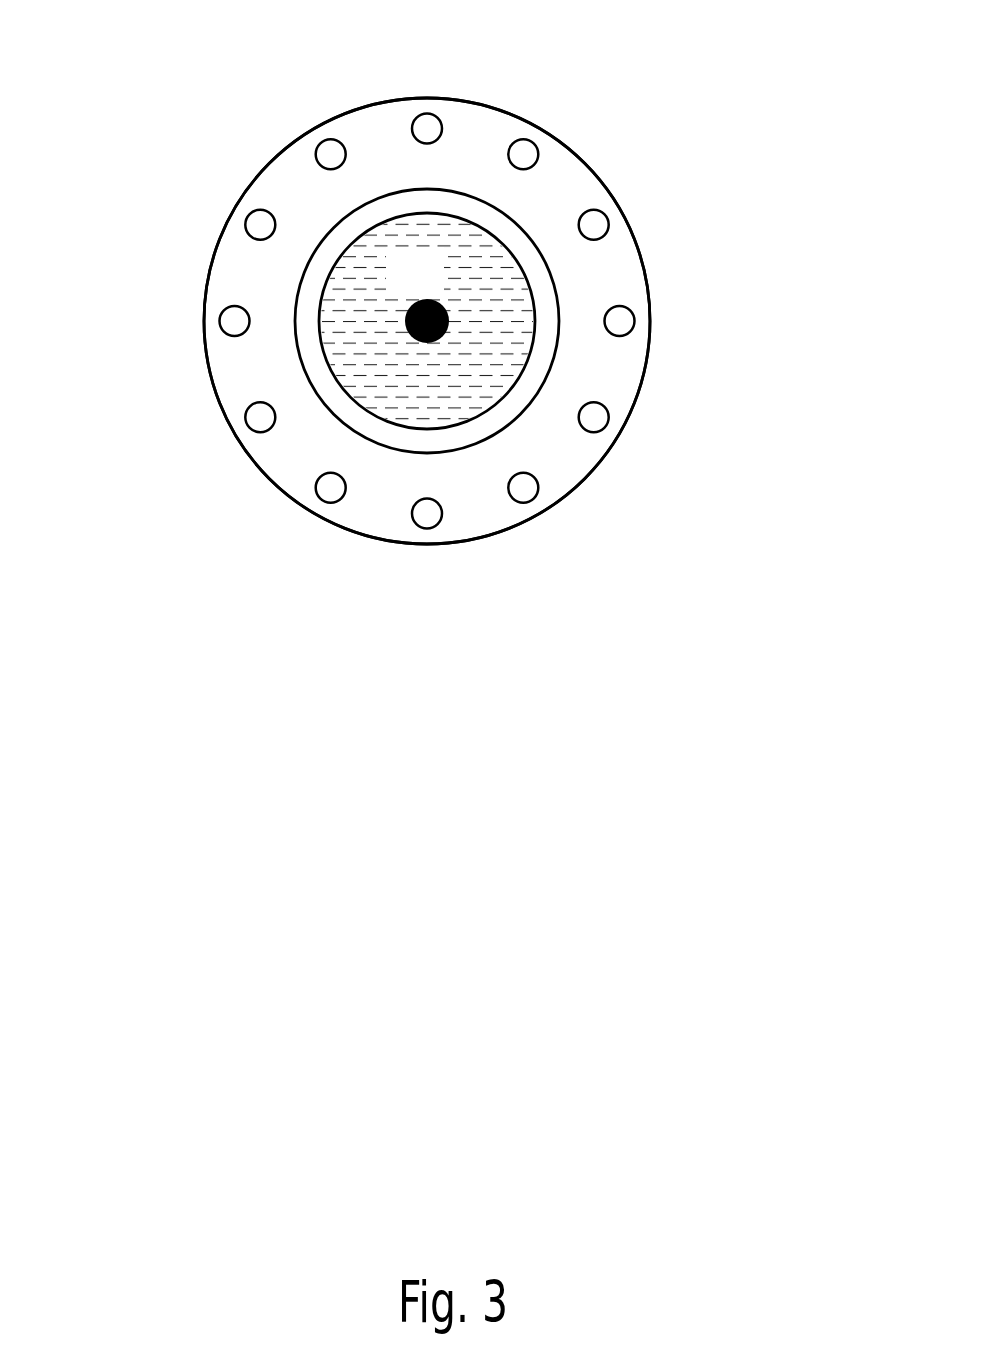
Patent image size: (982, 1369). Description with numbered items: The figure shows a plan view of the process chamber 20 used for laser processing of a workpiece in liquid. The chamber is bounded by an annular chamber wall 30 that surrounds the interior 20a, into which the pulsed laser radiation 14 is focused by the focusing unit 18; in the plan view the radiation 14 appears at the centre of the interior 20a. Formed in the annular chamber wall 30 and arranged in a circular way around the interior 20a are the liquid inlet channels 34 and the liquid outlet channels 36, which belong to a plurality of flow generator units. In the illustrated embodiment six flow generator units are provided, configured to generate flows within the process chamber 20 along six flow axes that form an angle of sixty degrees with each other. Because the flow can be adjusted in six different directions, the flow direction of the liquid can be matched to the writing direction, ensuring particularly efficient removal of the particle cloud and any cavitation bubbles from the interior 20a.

The pulsed laser radiation 14 is at (450, 322).
The focusing unit 18 is at (299, 454).
The process chamber 20 is at (436, 328).
The interior 20a is at (388, 287).
The annular chamber wall 30 is at (268, 160).
The liquid inlet channels 34 is at (428, 121).
The liquid outlet channels 36 is at (328, 147).